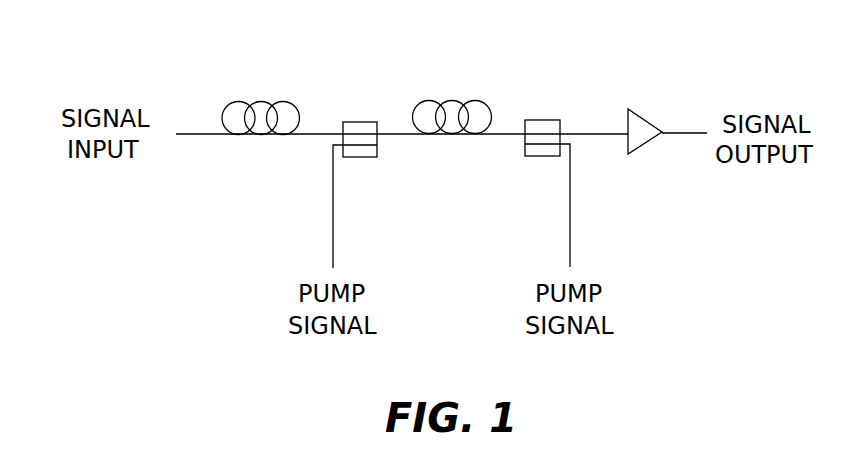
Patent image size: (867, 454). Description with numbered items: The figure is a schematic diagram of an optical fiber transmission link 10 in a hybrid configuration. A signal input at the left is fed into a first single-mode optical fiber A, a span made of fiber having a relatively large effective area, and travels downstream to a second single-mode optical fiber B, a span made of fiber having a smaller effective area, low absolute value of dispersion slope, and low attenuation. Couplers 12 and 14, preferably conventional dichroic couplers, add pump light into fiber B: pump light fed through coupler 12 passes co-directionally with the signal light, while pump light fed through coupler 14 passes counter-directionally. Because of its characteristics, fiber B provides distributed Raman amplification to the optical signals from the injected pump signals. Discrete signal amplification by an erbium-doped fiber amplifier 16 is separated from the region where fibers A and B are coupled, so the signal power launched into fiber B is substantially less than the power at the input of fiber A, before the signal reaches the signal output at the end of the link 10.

The optical fiber transmission link 10 is at (221, 227).
The coupler 12 is at (362, 157).
The coupler 14 is at (523, 156).
The erbium-doped fiber amplifier 16 is at (645, 117).
The first single-mode optical fiber A is at (255, 103).
The second single-mode optical fiber B is at (445, 100).